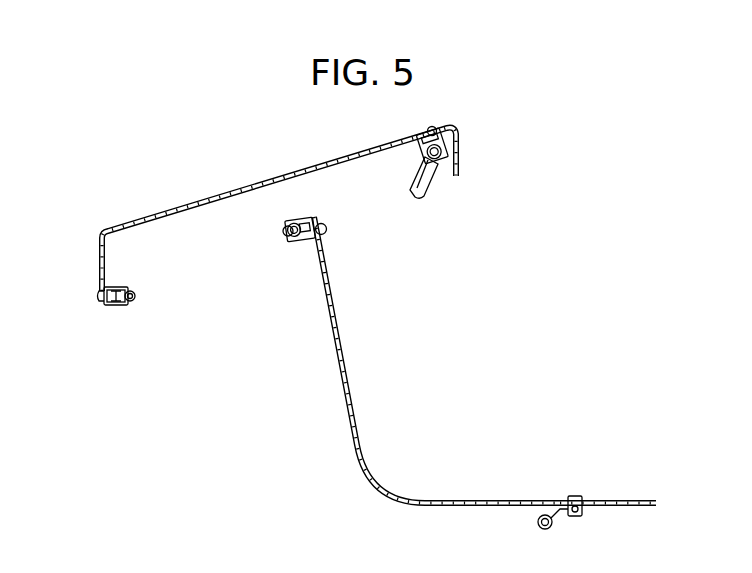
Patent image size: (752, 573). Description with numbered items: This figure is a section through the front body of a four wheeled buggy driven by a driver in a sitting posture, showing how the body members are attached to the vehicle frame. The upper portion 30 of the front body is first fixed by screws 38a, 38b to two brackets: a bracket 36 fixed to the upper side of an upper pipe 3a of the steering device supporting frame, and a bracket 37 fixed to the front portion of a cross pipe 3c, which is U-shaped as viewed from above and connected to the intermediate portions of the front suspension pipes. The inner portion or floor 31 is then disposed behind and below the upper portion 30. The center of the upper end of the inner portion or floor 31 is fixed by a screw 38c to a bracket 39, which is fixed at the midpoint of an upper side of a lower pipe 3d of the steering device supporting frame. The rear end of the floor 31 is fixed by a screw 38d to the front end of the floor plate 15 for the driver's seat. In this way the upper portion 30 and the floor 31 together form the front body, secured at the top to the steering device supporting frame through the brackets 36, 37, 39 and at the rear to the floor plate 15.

The upper portion 30 is at (305, 163).
The inner portion or floor 31 is at (346, 414).
The floor plate 15 is at (613, 508).
The bracket 36 is at (448, 142).
The upper pipe 3a is at (436, 177).
The screw 38a is at (430, 128).
The bracket 39 is at (300, 245).
The lower pipe 3d is at (283, 238).
The screw 38c is at (326, 226).
The bracket 37 is at (115, 306).
The cross pipe 3c is at (136, 297).
The screw 38b is at (98, 299).
The screw 38d is at (585, 465).